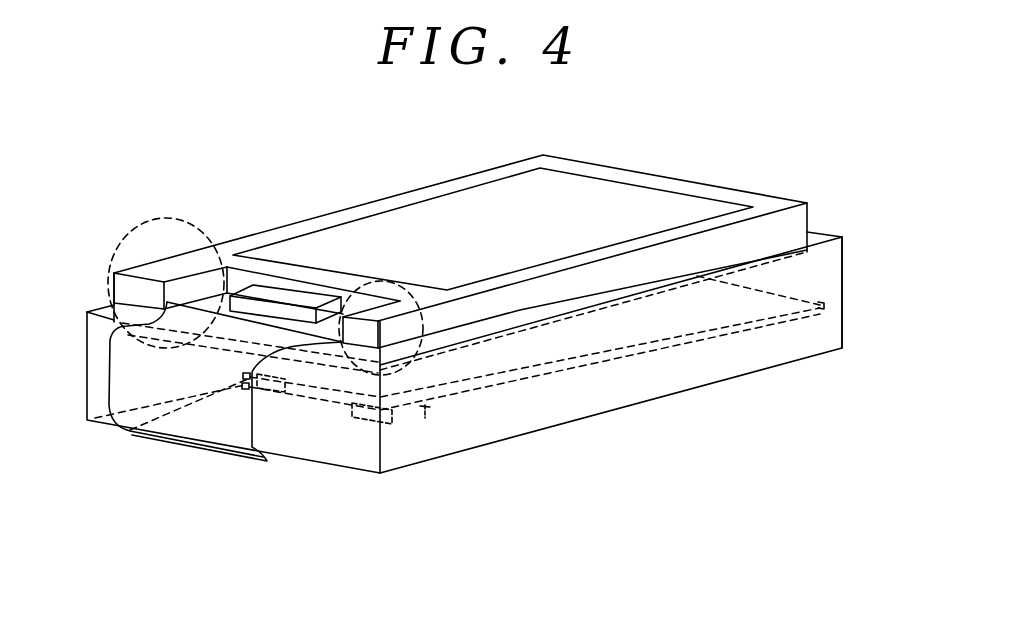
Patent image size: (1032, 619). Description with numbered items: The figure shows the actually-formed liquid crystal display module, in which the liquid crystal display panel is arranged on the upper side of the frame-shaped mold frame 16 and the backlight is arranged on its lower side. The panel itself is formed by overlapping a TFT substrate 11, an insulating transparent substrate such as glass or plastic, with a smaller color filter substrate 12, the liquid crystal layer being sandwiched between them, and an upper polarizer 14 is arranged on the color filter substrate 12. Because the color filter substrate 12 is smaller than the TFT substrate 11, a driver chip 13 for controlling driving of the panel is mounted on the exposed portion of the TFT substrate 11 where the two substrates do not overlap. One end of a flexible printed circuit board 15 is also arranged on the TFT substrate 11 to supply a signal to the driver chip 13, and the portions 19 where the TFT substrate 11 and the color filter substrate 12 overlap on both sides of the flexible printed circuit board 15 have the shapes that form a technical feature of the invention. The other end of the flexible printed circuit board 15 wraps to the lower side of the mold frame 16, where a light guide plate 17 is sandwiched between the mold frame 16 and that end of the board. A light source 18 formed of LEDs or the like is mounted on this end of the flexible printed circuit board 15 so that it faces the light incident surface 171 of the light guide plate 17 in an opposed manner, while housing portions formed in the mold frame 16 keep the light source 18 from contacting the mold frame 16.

The TFT substrate 11 is at (802, 237).
The color filter substrate 12 is at (788, 212).
The driver chip 13 is at (265, 291).
The upper polarizer 14 is at (597, 191).
The flexible printed circuit board 15 is at (117, 373).
The mold frame 16 is at (828, 273).
The light guide plate 17 is at (500, 368).
The light incident surface 171 is at (430, 414).
The light source 18 is at (243, 393).
The portions where the substrates overlap 19 is at (133, 232).